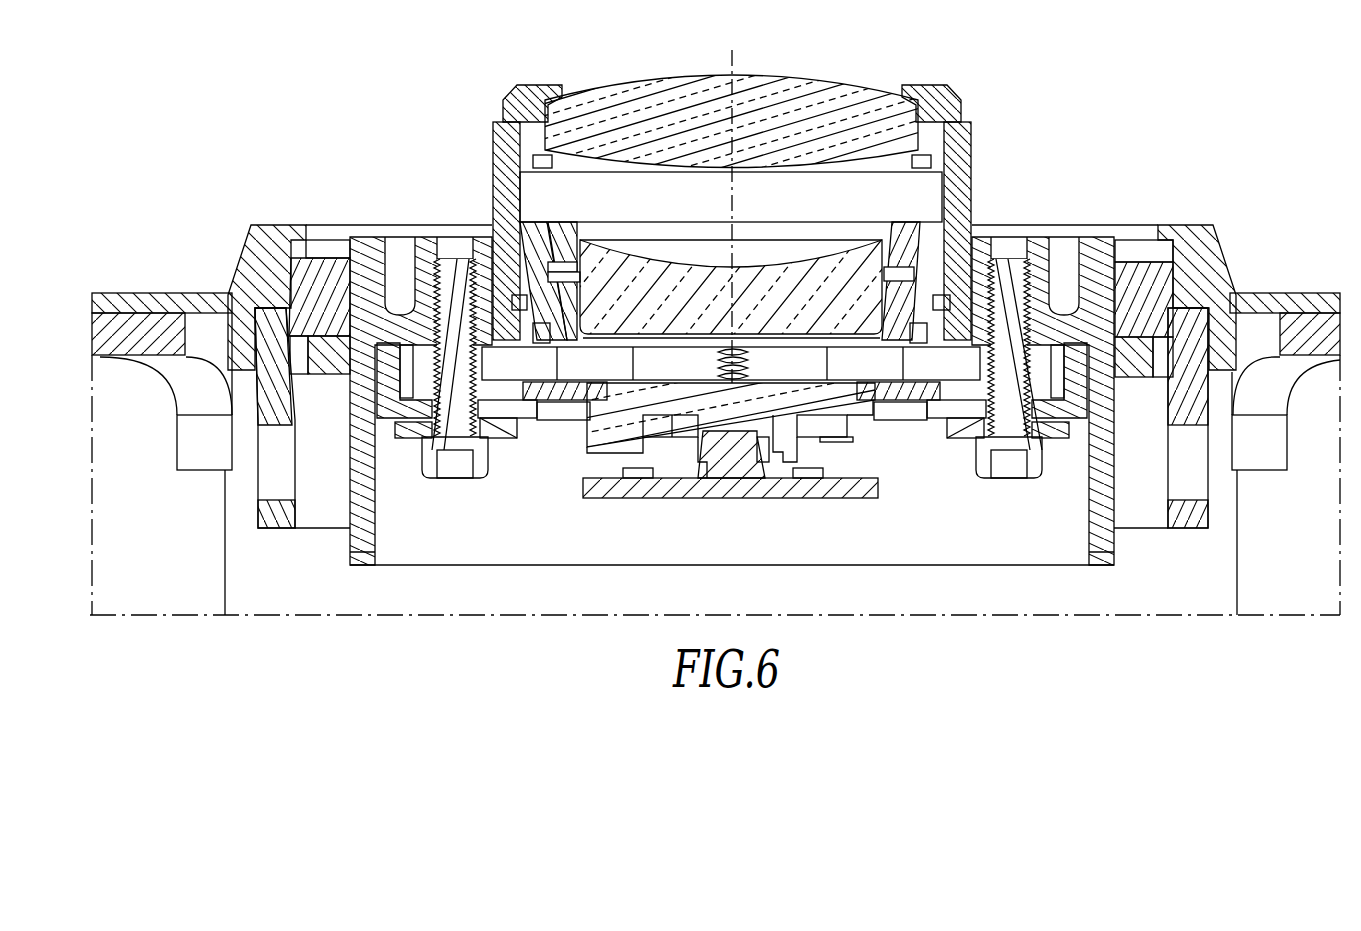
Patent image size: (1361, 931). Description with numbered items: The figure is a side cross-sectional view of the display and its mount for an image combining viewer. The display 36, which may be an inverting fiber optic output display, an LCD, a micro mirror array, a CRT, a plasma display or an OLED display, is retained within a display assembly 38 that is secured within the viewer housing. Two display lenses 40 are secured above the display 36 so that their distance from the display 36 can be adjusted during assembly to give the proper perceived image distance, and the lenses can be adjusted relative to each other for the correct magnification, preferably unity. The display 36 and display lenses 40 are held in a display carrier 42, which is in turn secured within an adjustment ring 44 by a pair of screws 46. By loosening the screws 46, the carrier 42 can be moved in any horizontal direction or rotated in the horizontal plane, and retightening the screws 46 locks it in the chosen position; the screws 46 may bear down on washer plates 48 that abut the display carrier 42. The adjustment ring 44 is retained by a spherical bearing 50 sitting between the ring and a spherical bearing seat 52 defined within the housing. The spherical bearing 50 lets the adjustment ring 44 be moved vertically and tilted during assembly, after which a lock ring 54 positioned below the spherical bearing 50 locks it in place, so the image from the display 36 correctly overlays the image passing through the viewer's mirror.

The display 36 is at (592, 440).
The display assembly 38 is at (1078, 631).
The display lenses 40 is at (795, 262).
The display carrier 42 is at (905, 402).
The adjustment ring 44 is at (348, 512).
The screws 46 is at (463, 480).
The washer plates 48 is at (532, 418).
The spherical bearing 50 is at (1145, 265).
The spherical bearing seat 52 is at (1183, 233).
The lock ring 54 is at (1137, 378).